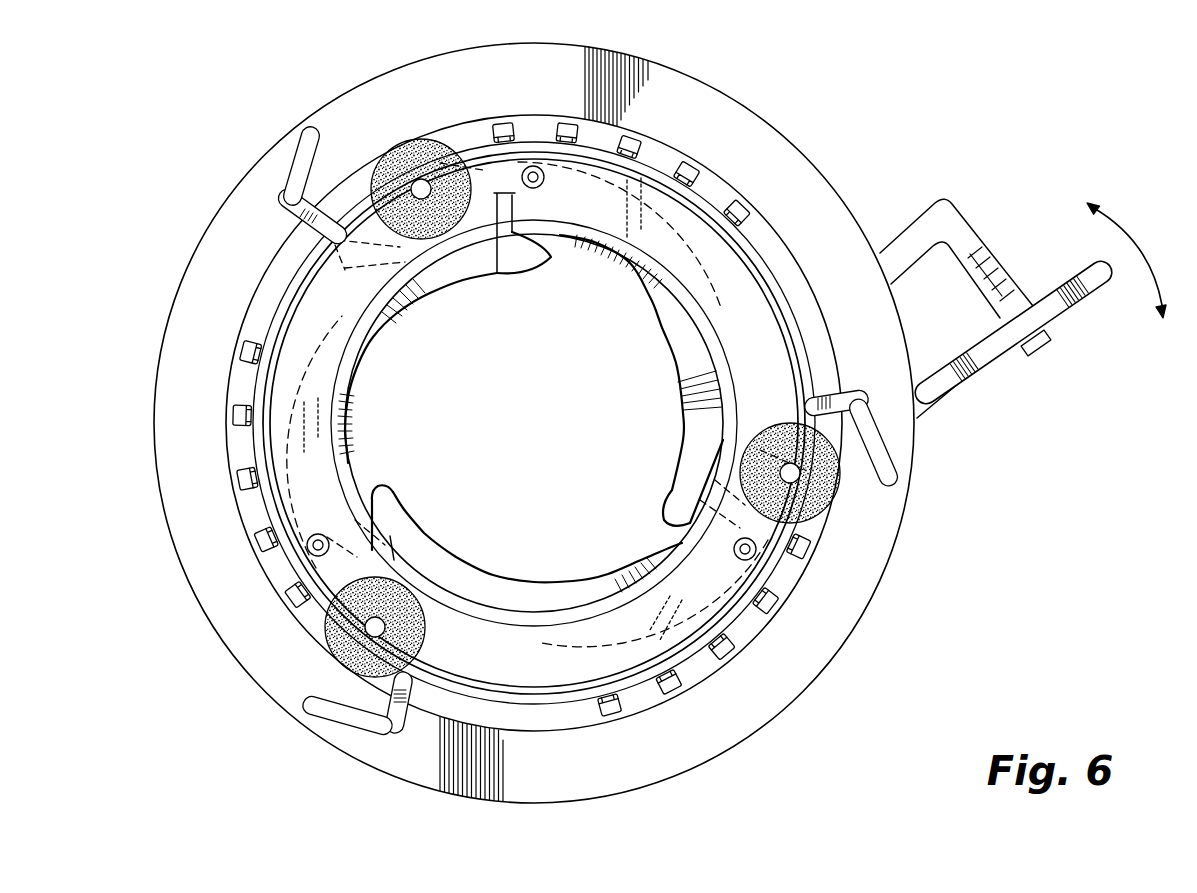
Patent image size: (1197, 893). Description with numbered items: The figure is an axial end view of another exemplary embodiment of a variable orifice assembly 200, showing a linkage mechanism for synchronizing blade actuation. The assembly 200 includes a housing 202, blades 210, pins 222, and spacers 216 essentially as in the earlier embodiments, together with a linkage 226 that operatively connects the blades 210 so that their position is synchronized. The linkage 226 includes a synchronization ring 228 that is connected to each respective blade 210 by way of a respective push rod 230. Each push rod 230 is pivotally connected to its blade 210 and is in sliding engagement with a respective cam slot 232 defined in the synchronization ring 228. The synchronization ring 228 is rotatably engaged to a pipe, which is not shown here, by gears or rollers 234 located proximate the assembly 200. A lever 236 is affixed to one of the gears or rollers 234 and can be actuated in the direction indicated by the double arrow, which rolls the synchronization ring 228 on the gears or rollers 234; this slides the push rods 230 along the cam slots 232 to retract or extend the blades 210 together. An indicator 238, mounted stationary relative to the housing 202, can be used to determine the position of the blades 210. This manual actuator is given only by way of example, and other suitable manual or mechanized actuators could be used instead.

The assembly 200 is at (868, 114).
The housing 202 is at (287, 283).
The blades 210 is at (434, 290).
The spacers 216 is at (500, 275).
The pins 222 is at (535, 166).
The linkage 226 is at (278, 748).
The synchronization ring 228 is at (778, 703).
The push rod 230 is at (290, 200).
The cam slot 232 is at (315, 128).
The gears or rollers 234 is at (420, 162).
The lever 236 is at (1058, 318).
The indicator 238 is at (968, 210).